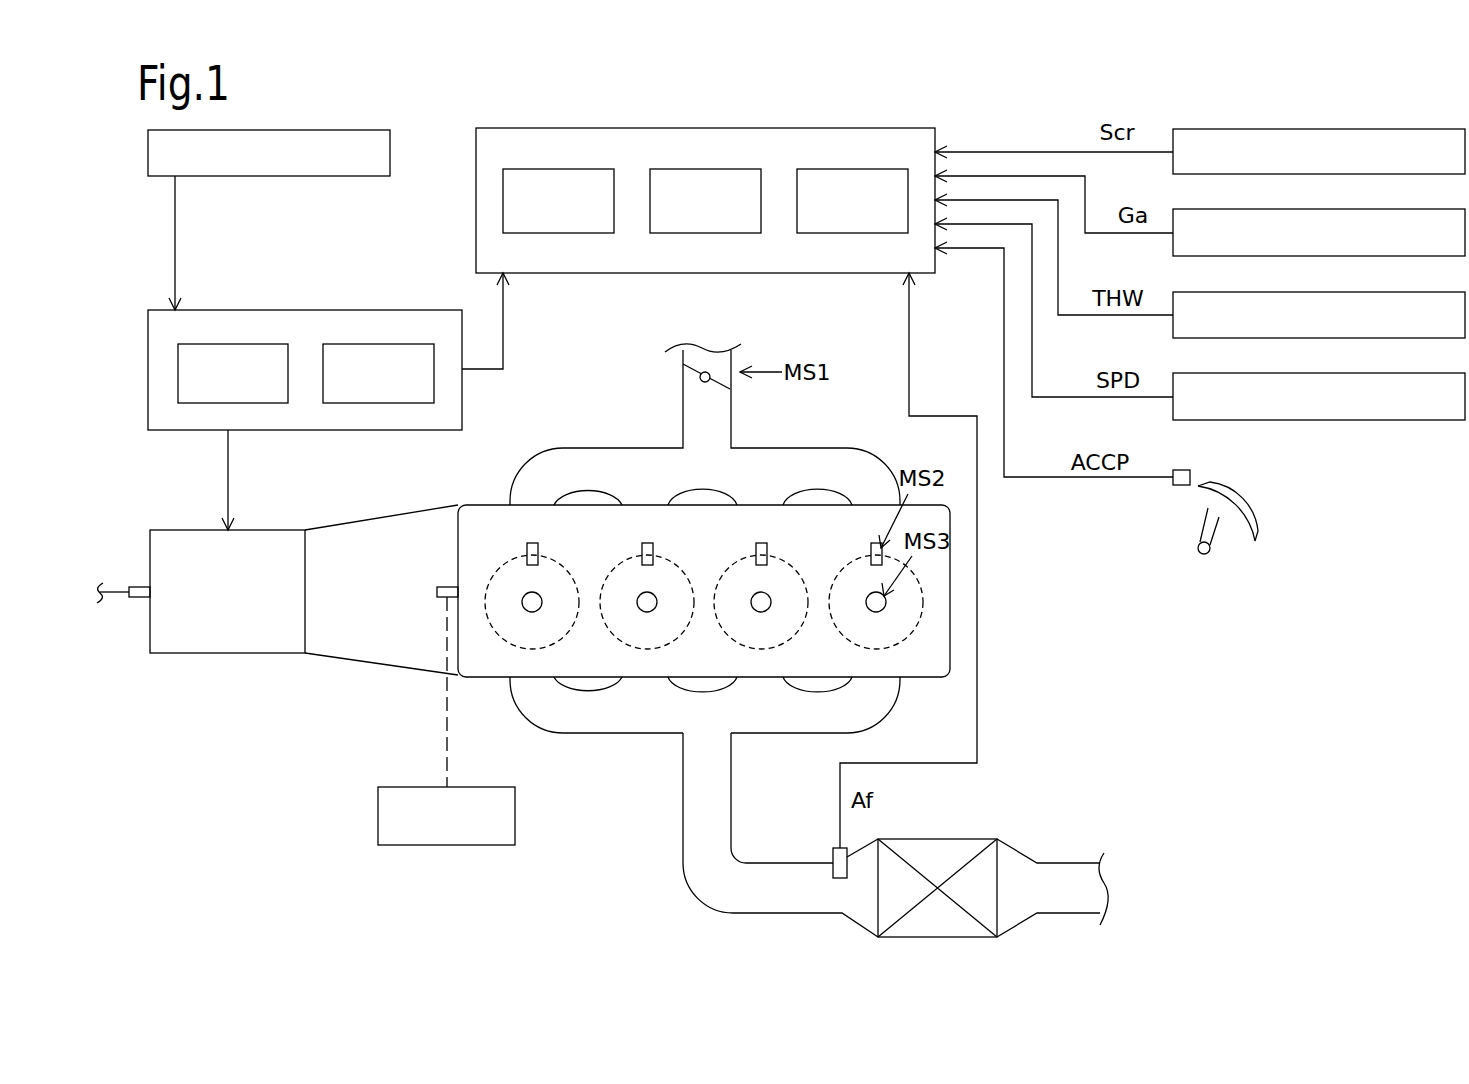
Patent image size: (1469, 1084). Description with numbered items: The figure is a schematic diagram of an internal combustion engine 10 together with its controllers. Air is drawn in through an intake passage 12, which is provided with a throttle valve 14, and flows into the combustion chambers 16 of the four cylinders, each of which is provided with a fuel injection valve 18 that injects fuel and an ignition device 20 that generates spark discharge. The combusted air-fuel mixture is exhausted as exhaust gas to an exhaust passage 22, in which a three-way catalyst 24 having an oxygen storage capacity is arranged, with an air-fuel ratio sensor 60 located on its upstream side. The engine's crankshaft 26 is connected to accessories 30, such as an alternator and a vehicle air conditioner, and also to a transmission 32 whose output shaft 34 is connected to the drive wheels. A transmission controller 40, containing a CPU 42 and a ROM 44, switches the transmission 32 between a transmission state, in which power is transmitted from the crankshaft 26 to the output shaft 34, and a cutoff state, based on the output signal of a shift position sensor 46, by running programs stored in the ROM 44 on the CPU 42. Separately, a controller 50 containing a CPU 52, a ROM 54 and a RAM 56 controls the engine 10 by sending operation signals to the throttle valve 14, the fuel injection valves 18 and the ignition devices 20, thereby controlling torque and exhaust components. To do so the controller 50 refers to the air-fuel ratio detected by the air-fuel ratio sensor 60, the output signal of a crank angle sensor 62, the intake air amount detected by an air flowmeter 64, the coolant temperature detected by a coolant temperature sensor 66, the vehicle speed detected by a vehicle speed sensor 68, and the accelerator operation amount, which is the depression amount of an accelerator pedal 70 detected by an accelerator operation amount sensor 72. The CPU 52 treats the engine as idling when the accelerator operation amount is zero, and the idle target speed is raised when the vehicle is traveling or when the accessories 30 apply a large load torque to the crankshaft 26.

The internal combustion engine 10 is at (620, 352).
The intake passage 12 is at (686, 424).
The throttle valve 14 is at (684, 375).
The combustion chamber 16 is at (504, 577).
The fuel injection valve 18 is at (537, 543).
The ignition device 20 is at (540, 608).
The exhaust passage 22 is at (880, 700).
The three-way catalyst 24 is at (940, 840).
The crankshaft 26 is at (445, 585).
The accessories 30 is at (478, 787).
The transmission 32 is at (315, 528).
The output shaft 34 is at (137, 585).
The transmission controller 40 is at (397, 310).
The CPU 42 is at (223, 344).
The ROM 44 is at (370, 344).
The shift position sensor 46 is at (299, 129).
The controller 50 is at (858, 128).
The CPU 52 is at (547, 169).
The ROM 54 is at (696, 169).
The RAM 56 is at (843, 169).
The air-fuel ratio sensor 60 is at (838, 848).
The crank angle sensor 62 is at (1400, 129).
The air flowmeter 64 is at (1400, 209).
The coolant temperature sensor 66 is at (1400, 292).
The vehicle speed sensor 68 is at (1400, 373).
The accelerator pedal 70 is at (1228, 508).
The accelerator operation amount sensor 72 is at (1181, 470).